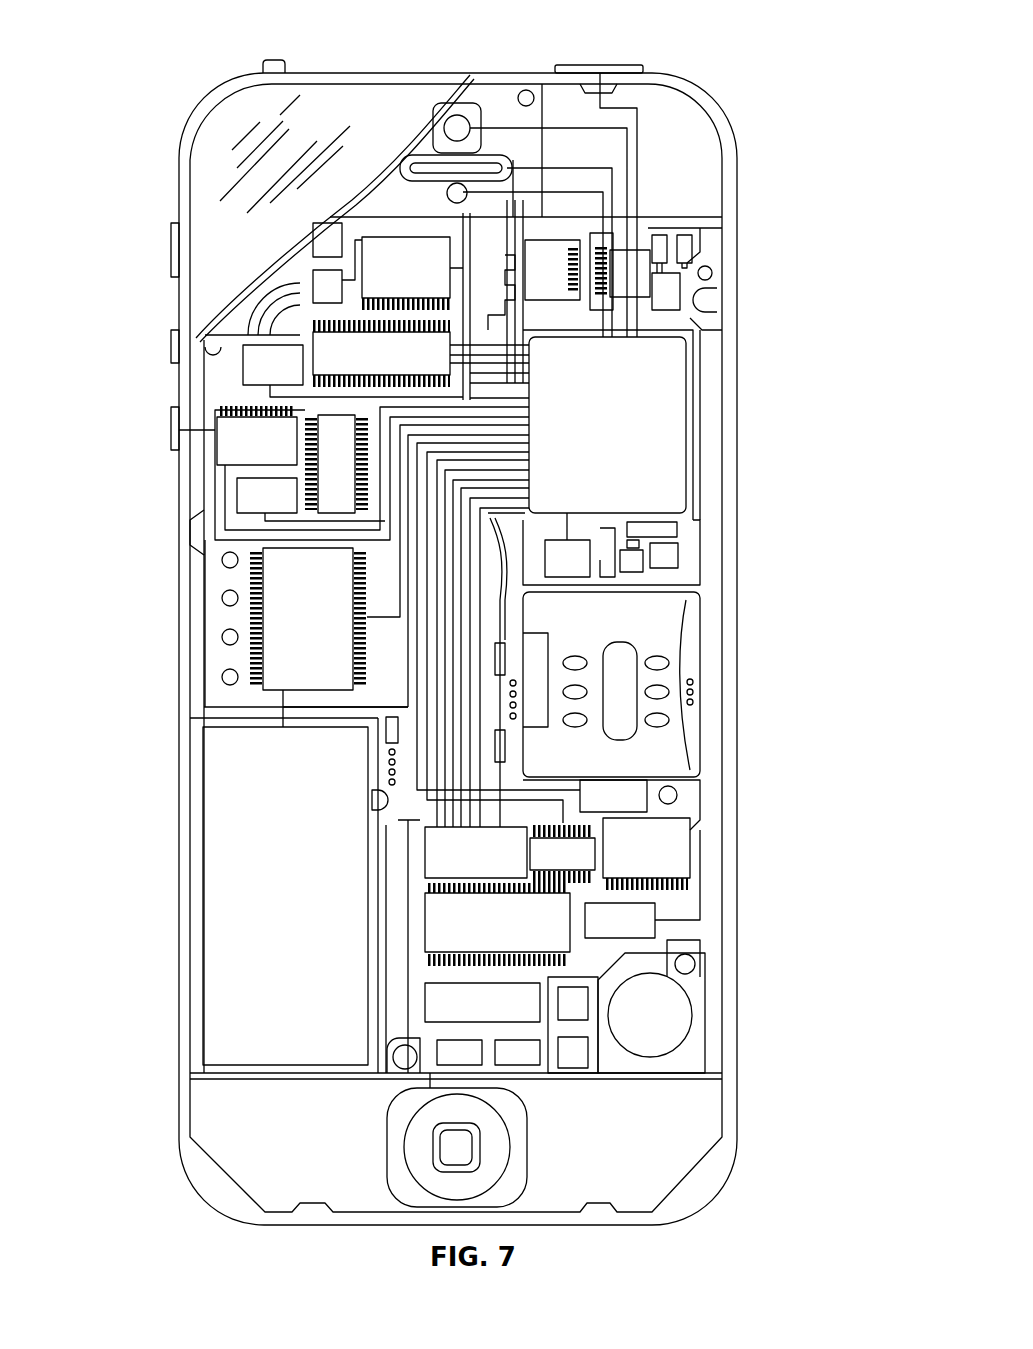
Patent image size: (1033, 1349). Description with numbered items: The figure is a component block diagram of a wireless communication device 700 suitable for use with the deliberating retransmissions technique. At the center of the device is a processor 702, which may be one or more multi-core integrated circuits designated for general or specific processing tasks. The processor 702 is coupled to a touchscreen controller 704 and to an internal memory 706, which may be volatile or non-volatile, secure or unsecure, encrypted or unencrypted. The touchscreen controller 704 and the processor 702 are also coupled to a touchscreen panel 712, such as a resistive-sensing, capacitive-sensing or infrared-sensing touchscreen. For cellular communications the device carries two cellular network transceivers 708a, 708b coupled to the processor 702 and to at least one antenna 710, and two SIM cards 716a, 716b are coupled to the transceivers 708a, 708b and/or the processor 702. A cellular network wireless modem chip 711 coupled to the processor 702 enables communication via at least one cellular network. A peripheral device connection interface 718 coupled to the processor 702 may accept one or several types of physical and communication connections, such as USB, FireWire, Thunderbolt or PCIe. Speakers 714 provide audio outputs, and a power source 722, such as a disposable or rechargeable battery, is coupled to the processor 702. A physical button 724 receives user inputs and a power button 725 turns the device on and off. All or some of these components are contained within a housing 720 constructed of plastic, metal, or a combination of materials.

The wireless communication device 700 is at (133, 66).
The processor 702 is at (457, 578).
The touchscreen controller 704 is at (386, 299).
The internal memory 706 is at (299, 618).
The cellular network transceiver 708a is at (628, 248).
The cellular network transceiver 708b is at (301, 466).
The antenna 710 is at (672, 300).
The cellular network wireless modem chip 711 is at (484, 946).
The touchscreen panel 712 is at (220, 168).
The speakers 714 is at (410, 165).
The SIM card 716a is at (611, 711).
The SIM card 716b is at (562, 878).
The peripheral device connection interface 718 is at (565, 1006).
The housing 720 is at (735, 1105).
The power source 722 is at (311, 895).
The physical button 724 is at (465, 1148).
The power button 725 is at (605, 62).